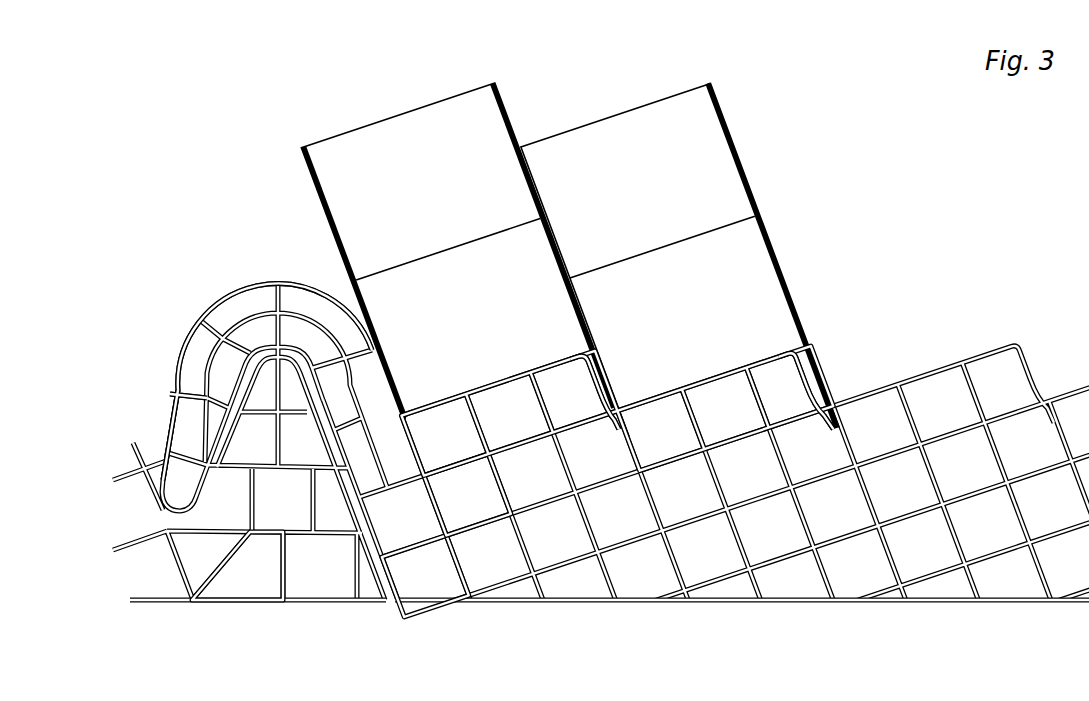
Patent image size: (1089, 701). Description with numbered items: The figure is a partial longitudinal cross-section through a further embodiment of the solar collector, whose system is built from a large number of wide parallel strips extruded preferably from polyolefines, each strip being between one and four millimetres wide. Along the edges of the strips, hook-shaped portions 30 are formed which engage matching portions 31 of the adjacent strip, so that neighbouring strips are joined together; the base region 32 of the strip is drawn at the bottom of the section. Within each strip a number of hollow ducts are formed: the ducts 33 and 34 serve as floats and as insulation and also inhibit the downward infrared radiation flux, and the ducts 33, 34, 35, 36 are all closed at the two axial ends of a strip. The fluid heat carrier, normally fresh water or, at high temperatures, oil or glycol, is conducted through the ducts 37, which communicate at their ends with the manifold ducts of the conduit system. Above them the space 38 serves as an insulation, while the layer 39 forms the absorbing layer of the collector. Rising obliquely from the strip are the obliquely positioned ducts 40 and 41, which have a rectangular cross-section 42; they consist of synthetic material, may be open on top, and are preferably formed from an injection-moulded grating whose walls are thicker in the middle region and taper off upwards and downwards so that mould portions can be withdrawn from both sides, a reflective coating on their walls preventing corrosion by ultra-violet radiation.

The hook-shaped portion 30 is at (255, 283).
The matching portion 31 is at (338, 597).
The base flange 32 is at (140, 604).
The duct 33 is at (445, 590).
The duct 34 is at (479, 509).
The duct 35 is at (265, 590).
The duct 36 is at (196, 363).
The duct 37 is at (455, 451).
The space 38 is at (598, 380).
The layer 39 is at (757, 353).
The obliquely positioned duct 40 is at (415, 123).
The obliquely positioned duct 41 is at (628, 120).
The rectangular cross-section 42 is at (477, 289).